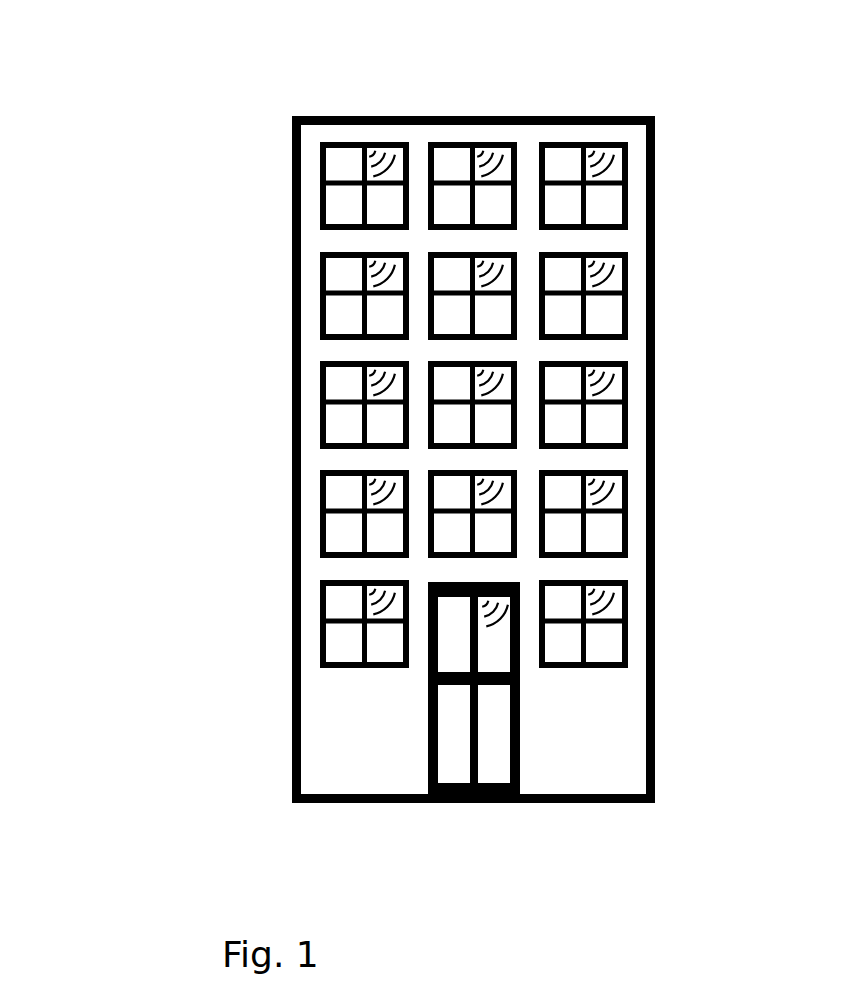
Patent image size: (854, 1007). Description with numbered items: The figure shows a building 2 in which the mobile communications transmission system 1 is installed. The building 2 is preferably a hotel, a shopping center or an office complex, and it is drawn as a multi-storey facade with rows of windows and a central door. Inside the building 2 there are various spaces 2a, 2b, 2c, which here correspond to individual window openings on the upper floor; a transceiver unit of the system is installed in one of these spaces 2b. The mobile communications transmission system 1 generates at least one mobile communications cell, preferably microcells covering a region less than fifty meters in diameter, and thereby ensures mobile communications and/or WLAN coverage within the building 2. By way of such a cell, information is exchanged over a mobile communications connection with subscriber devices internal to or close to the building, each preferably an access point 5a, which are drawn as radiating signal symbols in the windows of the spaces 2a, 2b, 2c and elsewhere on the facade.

The mobile communications transmission system 1 is at (138, 103).
The building 2 is at (657, 283).
The space 2a is at (603, 202).
The space 2b is at (452, 163).
The space 2c is at (340, 162).
The access point 5a is at (380, 146).